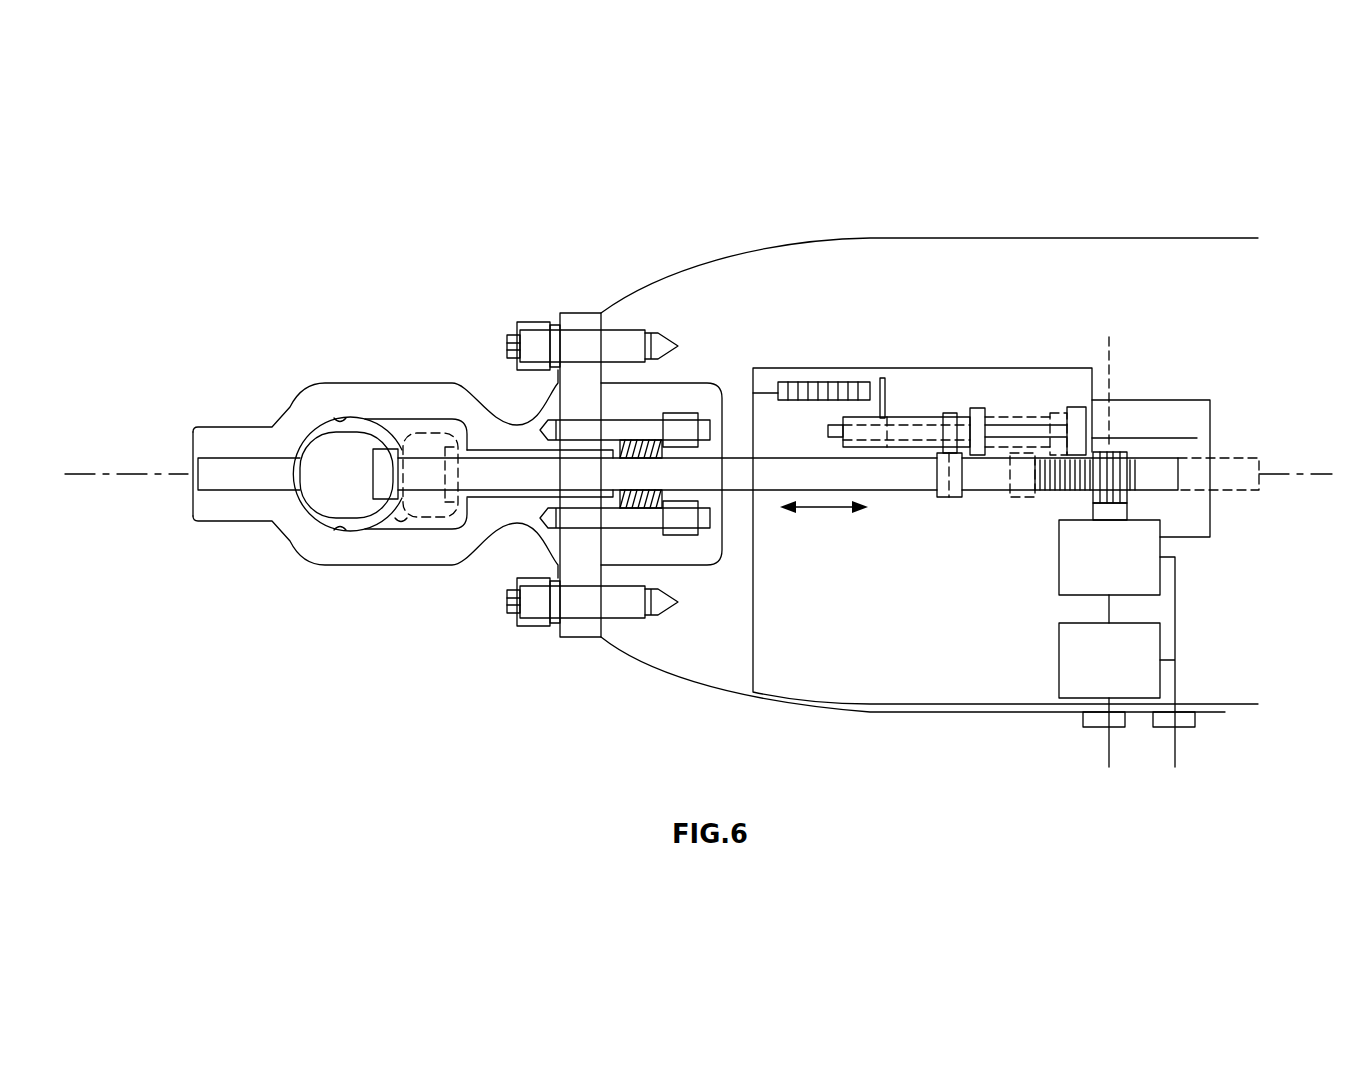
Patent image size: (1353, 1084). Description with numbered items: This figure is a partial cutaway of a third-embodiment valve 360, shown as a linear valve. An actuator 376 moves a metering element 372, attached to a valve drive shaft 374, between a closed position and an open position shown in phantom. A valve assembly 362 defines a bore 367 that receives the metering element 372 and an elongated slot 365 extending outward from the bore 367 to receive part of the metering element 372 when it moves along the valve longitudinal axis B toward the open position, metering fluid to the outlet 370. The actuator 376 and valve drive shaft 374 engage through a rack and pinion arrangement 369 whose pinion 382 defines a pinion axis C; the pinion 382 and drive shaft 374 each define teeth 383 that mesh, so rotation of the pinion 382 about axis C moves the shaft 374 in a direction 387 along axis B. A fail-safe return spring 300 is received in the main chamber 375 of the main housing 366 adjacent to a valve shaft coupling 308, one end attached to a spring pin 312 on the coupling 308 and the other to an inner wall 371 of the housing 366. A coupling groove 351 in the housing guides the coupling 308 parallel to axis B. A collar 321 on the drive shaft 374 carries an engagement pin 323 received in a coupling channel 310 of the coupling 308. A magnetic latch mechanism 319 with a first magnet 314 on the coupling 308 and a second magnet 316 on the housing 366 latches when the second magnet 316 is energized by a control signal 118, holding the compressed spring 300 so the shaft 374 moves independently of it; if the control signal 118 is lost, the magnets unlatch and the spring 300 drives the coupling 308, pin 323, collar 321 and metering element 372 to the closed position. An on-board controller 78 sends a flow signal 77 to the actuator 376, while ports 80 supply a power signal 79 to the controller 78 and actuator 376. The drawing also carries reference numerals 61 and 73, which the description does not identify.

The valve 360 is at (282, 228).
The main housing 366 is at (1053, 238).
The valve assembly 362 is at (300, 397).
The input shaft 61 is at (187, 503).
The metering element 372 is at (320, 507).
The outlet 370 is at (342, 527).
The bore 367 is at (343, 418).
The elongated slot 365 is at (397, 520).
The valve drive shaft 374 is at (490, 472).
The bolt 73 is at (510, 343).
The inner wall 371 is at (752, 415).
The main chamber 375 is at (900, 657).
The return spring 300 is at (828, 380).
The spring pin 312 is at (883, 378).
The valve shaft coupling 308 is at (907, 417).
The coupling groove 351 is at (828, 432).
The engagement pin 323 is at (950, 413).
The collar 321 is at (947, 497).
The coupling channel 310 is at (888, 430).
The first magnet 314 is at (971, 408).
The second magnet 316 is at (1069, 403).
The magnetic latch mechanism 319 is at (1013, 325).
The rack and pinion arrangement 369 is at (1141, 416).
The control signal 118 is at (1210, 425).
The teeth 383 is at (1098, 476).
The pinion 382 is at (1128, 510).
The actuator 376 is at (1058, 553).
The flow signal 77 is at (1109, 610).
The on-board controller 78 is at (1058, 653).
The power signal 79 is at (1175, 617).
The ports 80 is at (1093, 727).
The direction 387 is at (818, 509).
The valve longitudinal axis B is at (103, 474).
The pinion axis C is at (1112, 355).